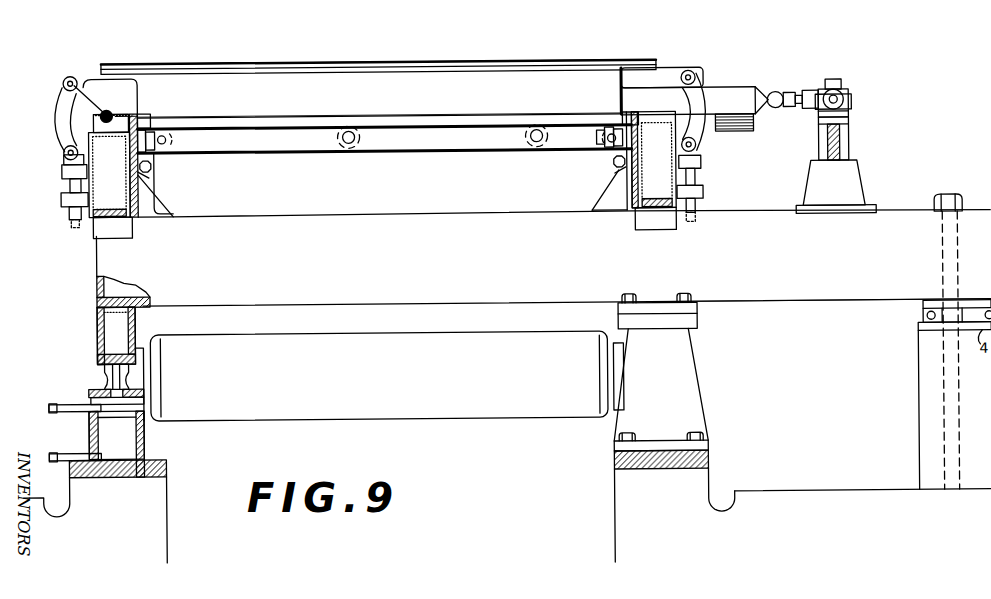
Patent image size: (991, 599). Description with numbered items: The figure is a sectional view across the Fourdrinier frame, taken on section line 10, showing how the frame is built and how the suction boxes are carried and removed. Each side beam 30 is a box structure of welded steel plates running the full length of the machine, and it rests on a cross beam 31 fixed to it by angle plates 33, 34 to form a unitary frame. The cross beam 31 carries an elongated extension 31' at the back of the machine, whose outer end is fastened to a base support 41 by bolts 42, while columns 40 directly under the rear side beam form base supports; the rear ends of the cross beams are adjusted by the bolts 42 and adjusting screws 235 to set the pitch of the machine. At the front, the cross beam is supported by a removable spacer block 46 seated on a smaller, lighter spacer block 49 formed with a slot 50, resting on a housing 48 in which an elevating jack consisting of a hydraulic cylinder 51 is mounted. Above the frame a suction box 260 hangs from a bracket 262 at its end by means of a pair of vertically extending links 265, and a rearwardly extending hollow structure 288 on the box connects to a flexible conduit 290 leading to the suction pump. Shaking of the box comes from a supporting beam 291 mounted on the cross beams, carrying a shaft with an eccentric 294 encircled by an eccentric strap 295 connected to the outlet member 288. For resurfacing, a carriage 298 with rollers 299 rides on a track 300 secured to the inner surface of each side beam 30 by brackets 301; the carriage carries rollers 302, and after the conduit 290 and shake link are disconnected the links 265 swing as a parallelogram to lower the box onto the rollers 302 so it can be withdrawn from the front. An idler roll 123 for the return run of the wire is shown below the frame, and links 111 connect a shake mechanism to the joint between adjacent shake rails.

The section line 10- 10 is at (60, 20).
The suction box 260 is at (545, 137).
The rollers 302 is at (359, 142).
The carriage 298 is at (303, 151).
The bracket 262 is at (680, 58).
The links 265 is at (67, 95).
The links 111 is at (93, 113).
The side beams 30 is at (382, 164).
The angle plate 33 is at (131, 225).
The rollers 299 is at (142, 118).
The track 300 is at (153, 166).
The brackets 301 is at (148, 172).
The angle plate 34 is at (163, 204).
The hollow structure 288 is at (735, 92).
The flexible conduit 290 is at (758, 134).
The eccentric strap 295 is at (829, 81).
The eccentric 294 is at (851, 105).
The supporting beam 291 is at (851, 146).
The bolts 42 is at (948, 198).
The cross beams 31 is at (567, 274).
The extension 31' is at (825, 307).
The adjusting screws 235 is at (923, 319).
The base supports 41 is at (917, 367).
The idler roll 123 is at (375, 409).
The columns 40 is at (674, 427).
The spacer blocks 46 is at (98, 321).
The slots 50 is at (128, 377).
The spacer blocks 49 is at (100, 378).
The hydraulic cylinder 51 is at (97, 440).
The housings 48 is at (150, 436).